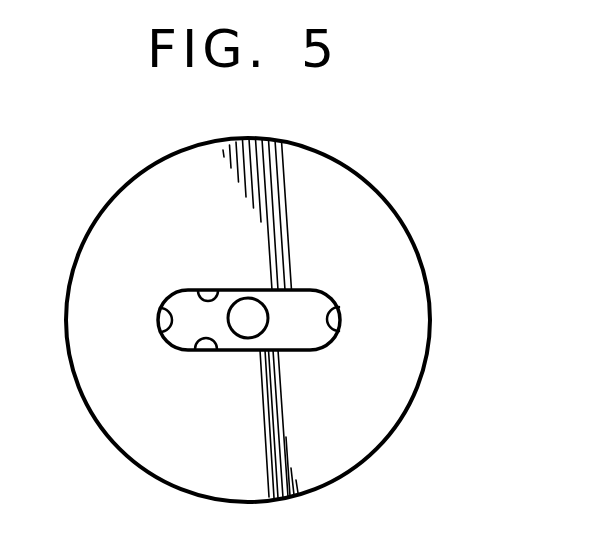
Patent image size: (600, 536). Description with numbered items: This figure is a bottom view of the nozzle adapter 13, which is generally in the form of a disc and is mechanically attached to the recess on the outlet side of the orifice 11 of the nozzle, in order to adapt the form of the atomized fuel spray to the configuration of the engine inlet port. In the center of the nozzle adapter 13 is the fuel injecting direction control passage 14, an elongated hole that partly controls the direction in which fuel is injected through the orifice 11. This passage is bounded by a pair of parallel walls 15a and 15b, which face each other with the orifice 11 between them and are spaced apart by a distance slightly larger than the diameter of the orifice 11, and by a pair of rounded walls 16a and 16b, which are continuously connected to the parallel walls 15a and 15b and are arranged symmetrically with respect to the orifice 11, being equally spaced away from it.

The nozzle adapter 13 is at (352, 197).
The fuel injecting direction control passage 14 is at (292, 323).
The orifice 11 is at (252, 322).
The parallel wall 15a is at (248, 252).
The parallel wall 15b is at (195, 351).
The rounded wall 16a is at (166, 320).
The rounded wall 16b is at (325, 330).